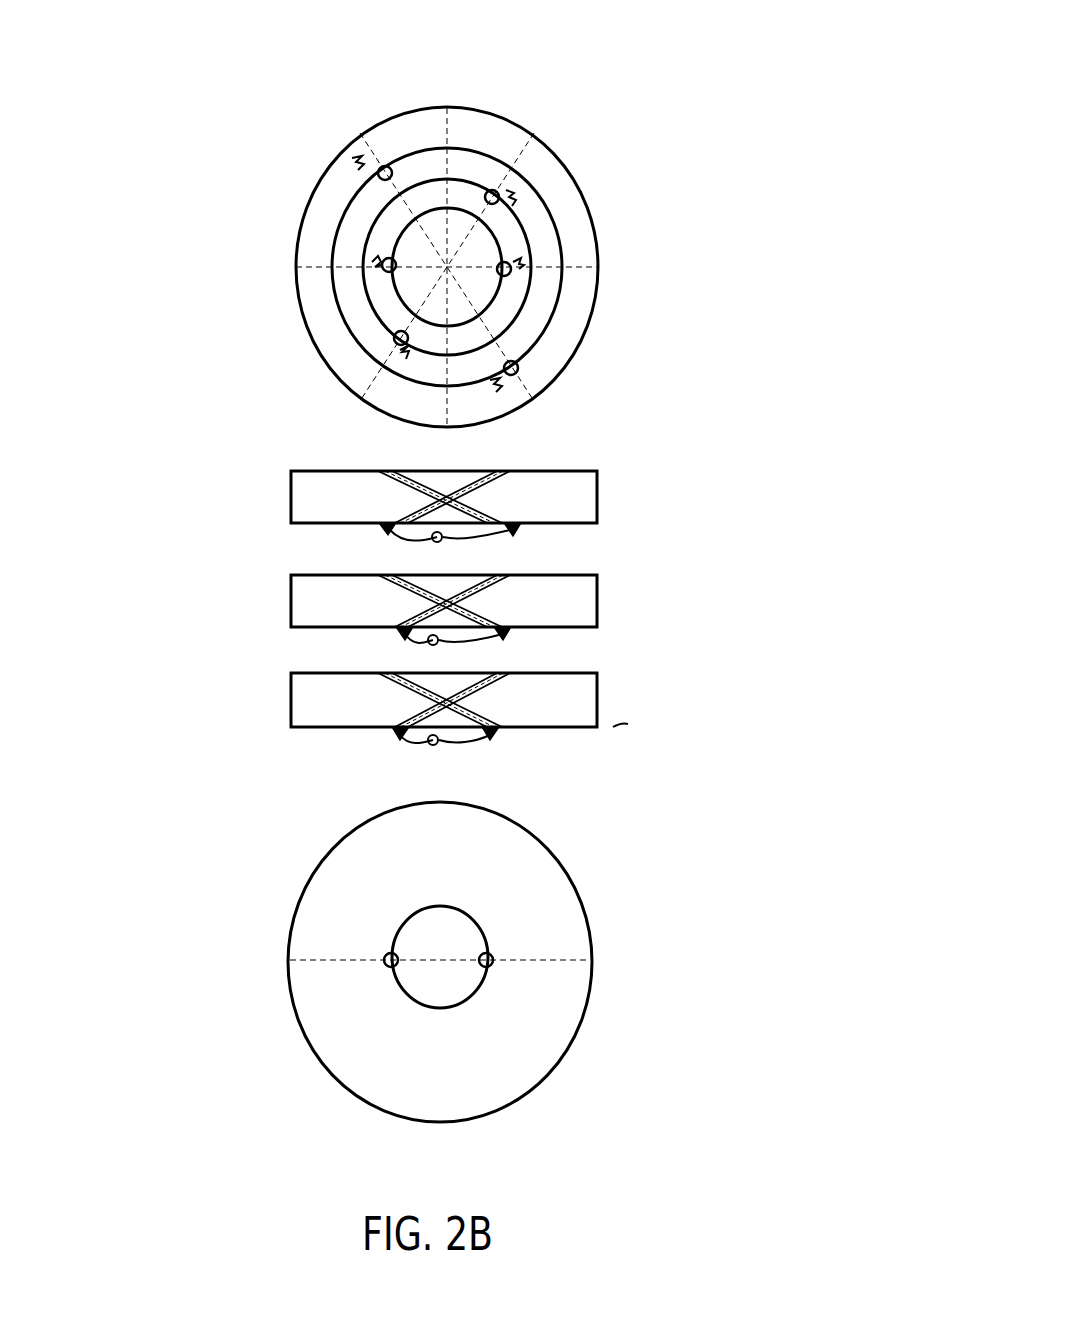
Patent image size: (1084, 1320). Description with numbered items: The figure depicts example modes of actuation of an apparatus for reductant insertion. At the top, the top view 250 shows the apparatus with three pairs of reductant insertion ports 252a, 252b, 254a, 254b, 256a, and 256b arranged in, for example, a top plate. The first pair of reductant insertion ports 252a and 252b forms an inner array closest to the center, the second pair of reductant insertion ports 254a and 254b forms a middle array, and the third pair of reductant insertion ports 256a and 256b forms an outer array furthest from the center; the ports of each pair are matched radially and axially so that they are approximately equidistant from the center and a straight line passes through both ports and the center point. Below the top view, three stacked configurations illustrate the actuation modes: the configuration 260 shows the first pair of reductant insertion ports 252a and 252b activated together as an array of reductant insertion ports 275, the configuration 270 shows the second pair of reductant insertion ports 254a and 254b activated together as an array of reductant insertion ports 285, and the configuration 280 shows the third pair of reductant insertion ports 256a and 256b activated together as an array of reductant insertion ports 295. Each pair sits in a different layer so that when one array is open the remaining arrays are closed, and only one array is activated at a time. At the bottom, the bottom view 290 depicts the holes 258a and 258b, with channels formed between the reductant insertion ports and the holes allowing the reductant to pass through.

The top view 250 is at (781, 55).
The first reductant insertion port 252a is at (380, 259).
The first reductant insertion port 252b is at (518, 262).
The second reductant insertion port 254a is at (385, 343).
The second reductant insertion port 254b is at (492, 190).
The third reductant insertion port 256a is at (382, 166).
The third reductant insertion port 256b is at (518, 372).
The hole 258a is at (398, 737).
The hole 258b is at (493, 735).
The configuration 260 is at (744, 474).
The configuration 270 is at (746, 603).
The array of reductant insertion ports 275 is at (450, 547).
The configuration 280 is at (742, 716).
The array of reductant insertion ports 285 is at (454, 650).
The bottom view 290 is at (737, 872).
The array of reductant insertion ports 295 is at (445, 756).